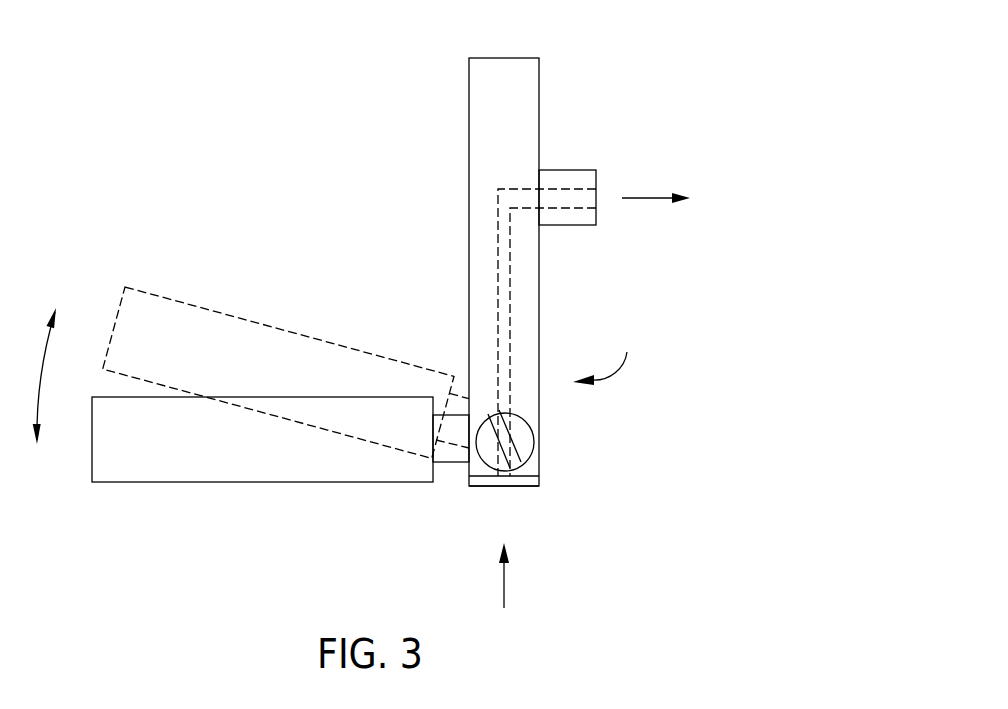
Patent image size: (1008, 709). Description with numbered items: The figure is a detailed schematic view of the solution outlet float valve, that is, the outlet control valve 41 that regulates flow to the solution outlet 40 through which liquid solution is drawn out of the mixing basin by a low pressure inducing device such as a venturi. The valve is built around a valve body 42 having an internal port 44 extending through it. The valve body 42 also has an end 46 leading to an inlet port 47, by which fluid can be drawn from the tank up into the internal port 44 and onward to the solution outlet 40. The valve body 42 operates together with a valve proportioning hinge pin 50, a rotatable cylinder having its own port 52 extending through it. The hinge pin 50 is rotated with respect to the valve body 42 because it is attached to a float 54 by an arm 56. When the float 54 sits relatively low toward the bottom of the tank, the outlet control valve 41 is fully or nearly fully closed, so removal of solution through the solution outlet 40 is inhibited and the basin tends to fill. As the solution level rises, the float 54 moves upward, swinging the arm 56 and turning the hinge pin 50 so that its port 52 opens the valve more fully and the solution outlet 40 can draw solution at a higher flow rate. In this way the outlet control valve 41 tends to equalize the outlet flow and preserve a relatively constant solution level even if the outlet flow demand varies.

The solution outlet 40 is at (597, 180).
The outlet control valve 41 is at (607, 353).
The valve body 42 is at (528, 280).
The internal port 44 is at (507, 265).
The end 46 is at (530, 480).
The inlet port 47 is at (505, 477).
The valve proportioning hinge pin 50 is at (518, 425).
The port 52 is at (498, 412).
The float 54 is at (124, 483).
The arm 56 is at (452, 465).